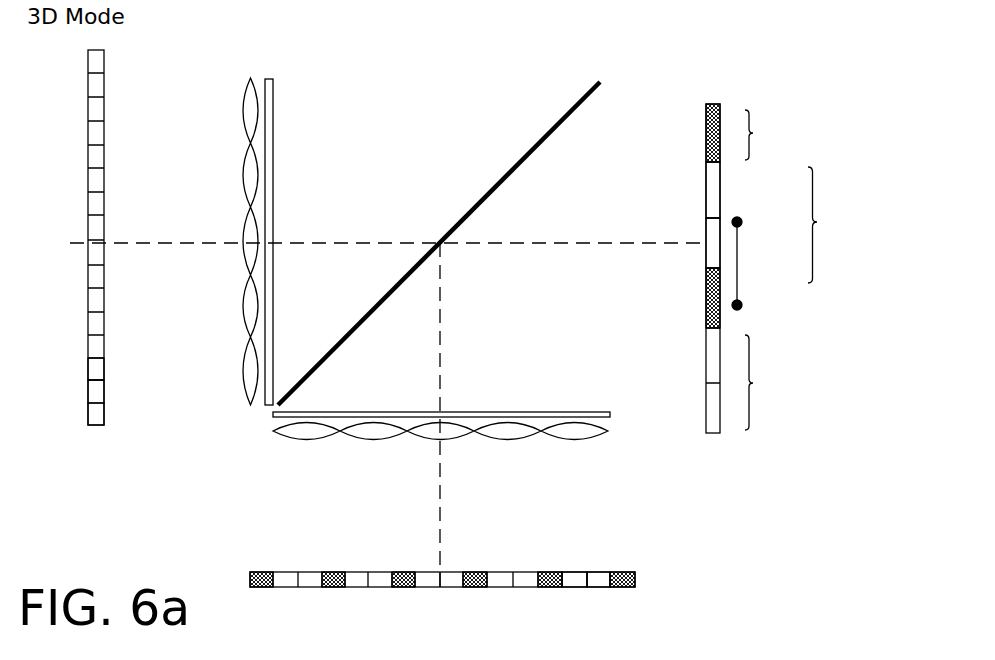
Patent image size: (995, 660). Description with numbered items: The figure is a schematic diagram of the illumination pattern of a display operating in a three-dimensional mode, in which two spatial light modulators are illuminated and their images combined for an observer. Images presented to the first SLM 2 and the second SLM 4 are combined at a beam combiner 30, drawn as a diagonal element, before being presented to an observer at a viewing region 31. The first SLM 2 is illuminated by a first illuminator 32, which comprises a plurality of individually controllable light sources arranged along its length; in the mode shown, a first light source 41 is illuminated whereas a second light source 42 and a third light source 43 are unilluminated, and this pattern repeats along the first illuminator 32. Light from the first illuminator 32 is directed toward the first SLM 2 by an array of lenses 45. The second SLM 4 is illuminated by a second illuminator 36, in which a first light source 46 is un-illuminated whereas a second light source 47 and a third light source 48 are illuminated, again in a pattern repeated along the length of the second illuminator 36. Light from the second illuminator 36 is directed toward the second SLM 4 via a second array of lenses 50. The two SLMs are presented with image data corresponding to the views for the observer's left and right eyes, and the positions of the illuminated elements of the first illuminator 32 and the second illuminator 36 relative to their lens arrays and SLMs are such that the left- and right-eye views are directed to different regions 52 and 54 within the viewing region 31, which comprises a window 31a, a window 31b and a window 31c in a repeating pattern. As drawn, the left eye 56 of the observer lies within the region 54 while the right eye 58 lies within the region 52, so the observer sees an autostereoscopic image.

The first SLM 2 is at (582, 409).
The second SLM 4 is at (274, 98).
The beam combiner 30 is at (572, 108).
The viewing region 31 is at (727, 163).
The window 31a is at (661, 334).
The window 31b is at (632, 163).
The window 31c is at (635, 286).
The first illuminator 32 is at (638, 580).
The second illuminator 36 is at (92, 428).
The first light source 41 is at (615, 572).
The second light source 42 is at (598, 571).
The third light source 43 is at (568, 571).
The array of lenses 45 is at (598, 437).
The first light source 46 is at (106, 413).
The second light source 47 is at (106, 392).
The third light source 48 is at (106, 370).
The second array of lenses 50 is at (243, 92).
The region 52 is at (801, 298).
The region 54 is at (765, 337).
The left eye 56 is at (745, 305).
The right eye 58 is at (740, 218).